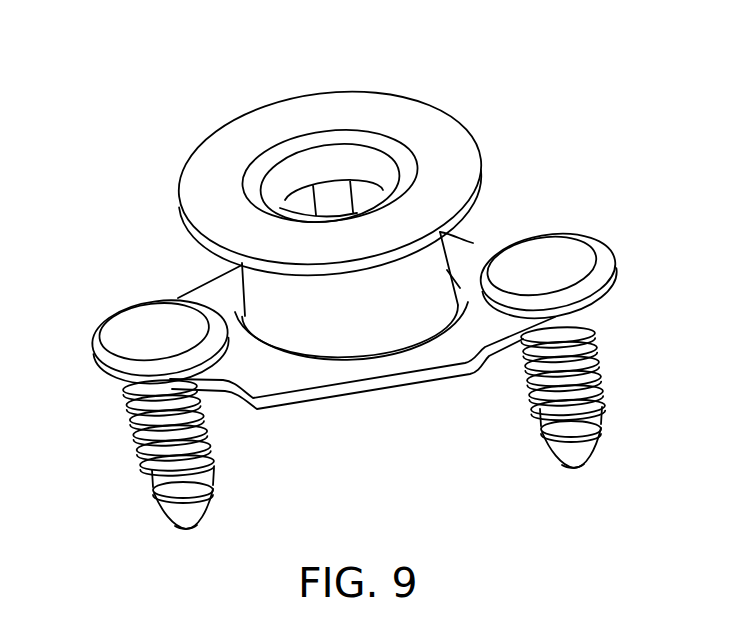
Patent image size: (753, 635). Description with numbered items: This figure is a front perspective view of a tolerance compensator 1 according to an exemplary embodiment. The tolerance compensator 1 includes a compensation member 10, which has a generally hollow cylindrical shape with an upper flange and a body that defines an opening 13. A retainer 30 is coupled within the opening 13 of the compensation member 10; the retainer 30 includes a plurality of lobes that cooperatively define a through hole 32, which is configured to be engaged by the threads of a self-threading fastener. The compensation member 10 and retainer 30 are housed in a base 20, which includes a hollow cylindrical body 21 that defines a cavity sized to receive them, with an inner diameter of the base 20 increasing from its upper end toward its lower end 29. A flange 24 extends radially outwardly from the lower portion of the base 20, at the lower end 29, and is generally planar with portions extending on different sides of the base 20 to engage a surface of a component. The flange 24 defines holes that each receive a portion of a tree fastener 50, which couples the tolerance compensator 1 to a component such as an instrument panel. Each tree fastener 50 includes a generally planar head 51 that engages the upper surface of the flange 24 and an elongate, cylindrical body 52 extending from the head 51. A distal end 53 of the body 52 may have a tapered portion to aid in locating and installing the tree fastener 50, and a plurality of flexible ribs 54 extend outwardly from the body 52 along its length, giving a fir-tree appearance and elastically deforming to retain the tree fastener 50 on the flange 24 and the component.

The tolerance compensator 1 is at (359, 244).
The compensation member 10 is at (447, 157).
The opening 13 is at (402, 144).
The base 20 is at (357, 335).
The hollow cylindrical body 21 is at (270, 291).
The flange 24 is at (447, 347).
The lower end 29 is at (463, 292).
The retainer 30 is at (322, 192).
The through hole 32 is at (350, 182).
The tree fastener 50 is at (355, 373).
The head 51 is at (112, 360).
The body 52 is at (150, 478).
The distal end 53 is at (168, 515).
The flexible ribs 54 is at (137, 443).